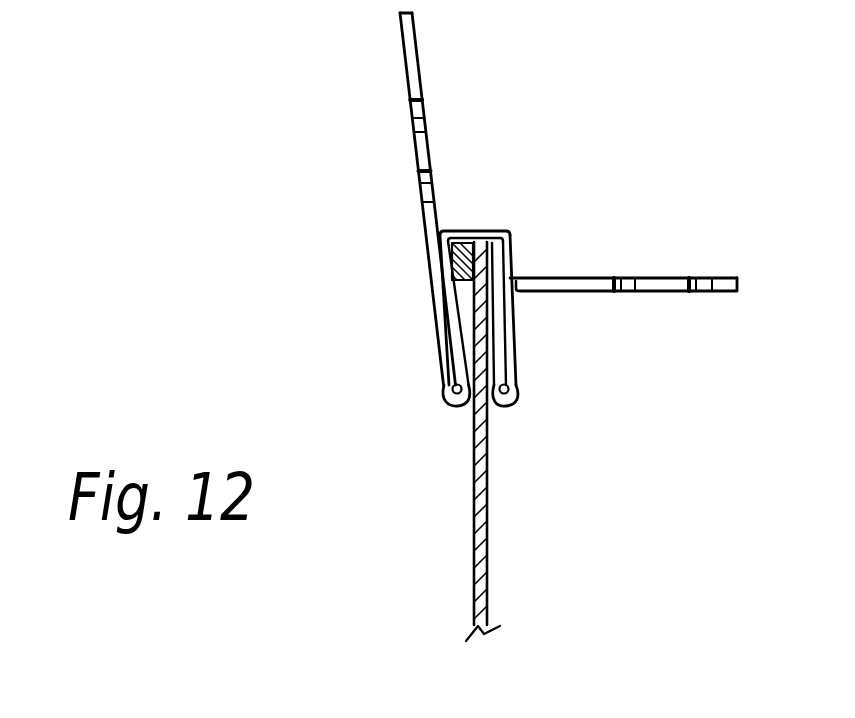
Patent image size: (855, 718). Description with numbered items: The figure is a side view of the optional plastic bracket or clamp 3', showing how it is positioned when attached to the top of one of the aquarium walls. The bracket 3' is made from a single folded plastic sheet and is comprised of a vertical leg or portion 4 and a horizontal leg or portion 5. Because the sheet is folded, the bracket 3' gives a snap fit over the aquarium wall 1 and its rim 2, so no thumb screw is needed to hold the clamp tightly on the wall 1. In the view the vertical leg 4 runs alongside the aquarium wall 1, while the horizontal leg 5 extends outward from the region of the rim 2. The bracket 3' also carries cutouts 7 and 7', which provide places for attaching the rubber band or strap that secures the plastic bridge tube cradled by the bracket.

The aquarium wall 1 is at (486, 497).
The rim 2 is at (477, 242).
The bracket 3' is at (382, 199).
The vertical leg 4 is at (424, 147).
The horizontal leg 5 is at (586, 280).
The cutout 7 is at (450, 124).
The cutout 7' is at (646, 316).